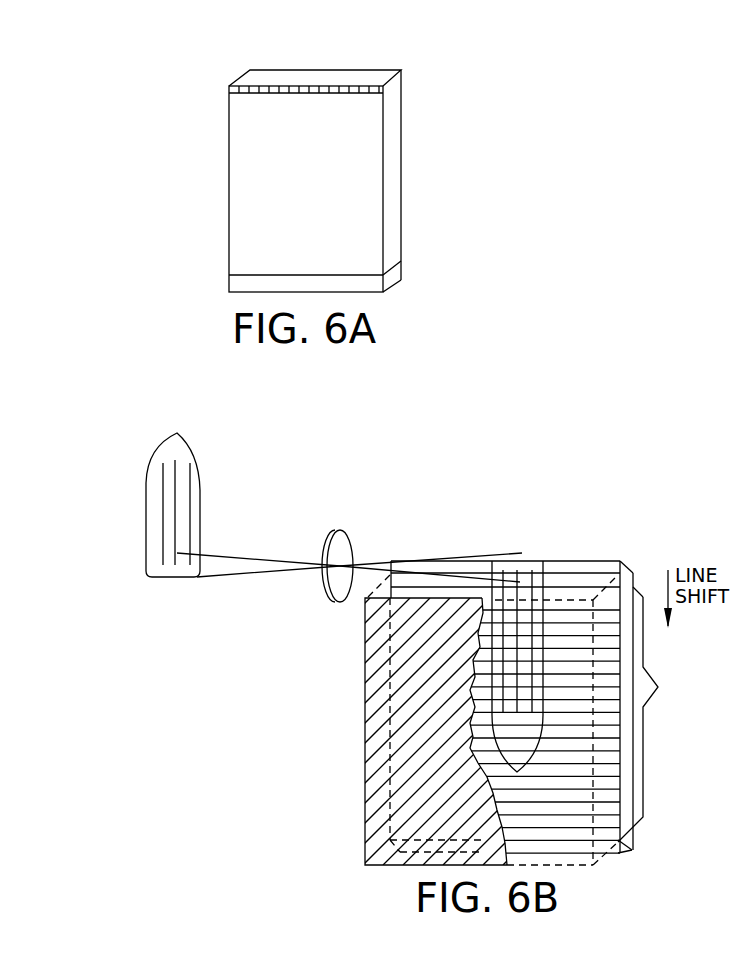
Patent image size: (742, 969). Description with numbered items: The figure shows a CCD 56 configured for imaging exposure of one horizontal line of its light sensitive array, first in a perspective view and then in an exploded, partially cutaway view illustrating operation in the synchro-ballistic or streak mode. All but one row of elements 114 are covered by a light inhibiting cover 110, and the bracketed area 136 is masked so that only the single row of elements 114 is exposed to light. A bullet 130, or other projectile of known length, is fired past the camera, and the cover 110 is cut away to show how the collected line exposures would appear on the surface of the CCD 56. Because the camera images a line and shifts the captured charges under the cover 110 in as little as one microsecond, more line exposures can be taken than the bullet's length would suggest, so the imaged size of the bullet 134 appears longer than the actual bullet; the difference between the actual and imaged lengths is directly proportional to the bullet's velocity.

In FIG. 6A, the CCD 56 is at (394, 128).
In FIG. 6A, the light inhibiting cover 110 is at (377, 202).
In FIG. 6A, the row of elements 114 is at (353, 87).
In FIG. 6B, the row of elements 114 is at (620, 562).
In FIG. 6B, the bullet 130 is at (202, 460).
In FIG. 6B, the imaged size of the bullet 134 is at (547, 563).
In FIG. 6B, the bracketed area 136 is at (586, 725).